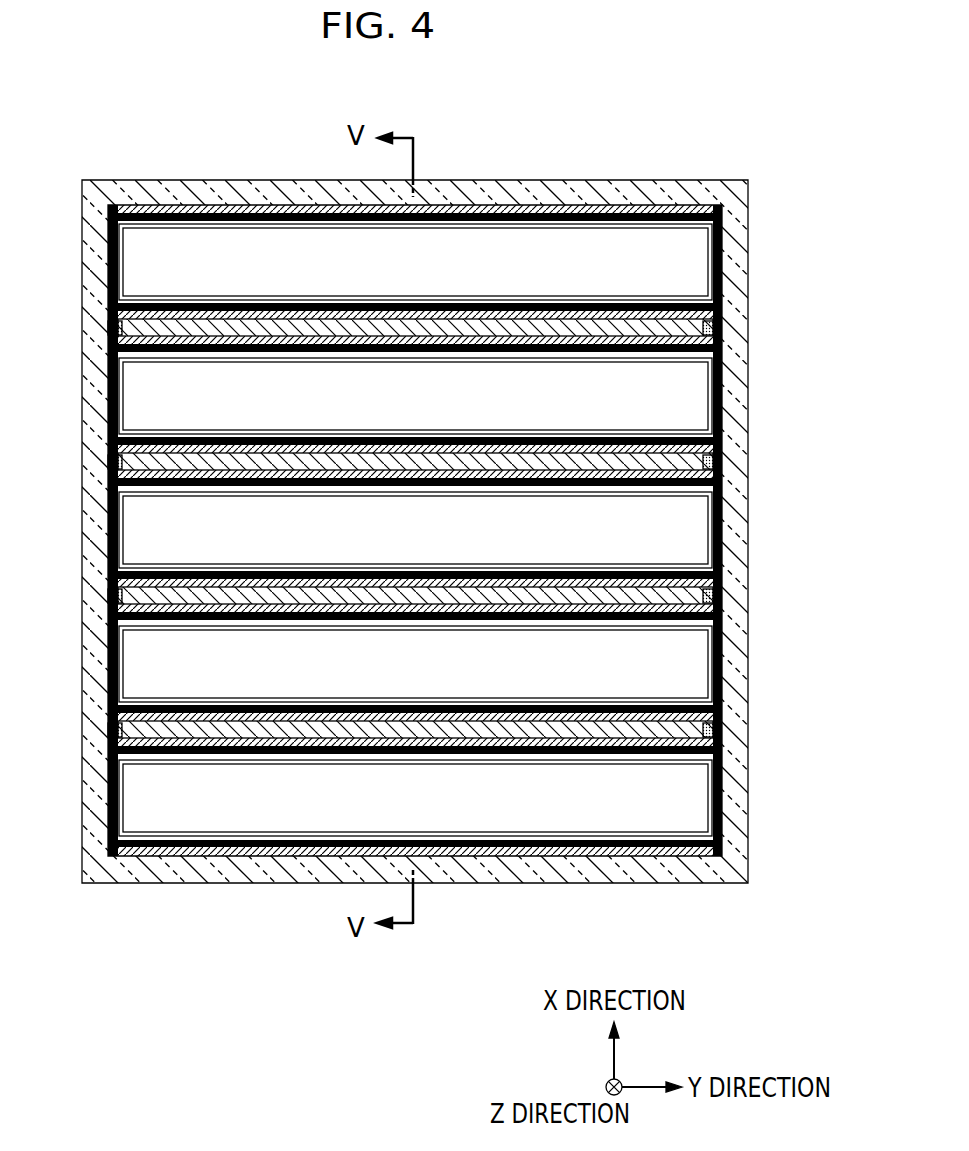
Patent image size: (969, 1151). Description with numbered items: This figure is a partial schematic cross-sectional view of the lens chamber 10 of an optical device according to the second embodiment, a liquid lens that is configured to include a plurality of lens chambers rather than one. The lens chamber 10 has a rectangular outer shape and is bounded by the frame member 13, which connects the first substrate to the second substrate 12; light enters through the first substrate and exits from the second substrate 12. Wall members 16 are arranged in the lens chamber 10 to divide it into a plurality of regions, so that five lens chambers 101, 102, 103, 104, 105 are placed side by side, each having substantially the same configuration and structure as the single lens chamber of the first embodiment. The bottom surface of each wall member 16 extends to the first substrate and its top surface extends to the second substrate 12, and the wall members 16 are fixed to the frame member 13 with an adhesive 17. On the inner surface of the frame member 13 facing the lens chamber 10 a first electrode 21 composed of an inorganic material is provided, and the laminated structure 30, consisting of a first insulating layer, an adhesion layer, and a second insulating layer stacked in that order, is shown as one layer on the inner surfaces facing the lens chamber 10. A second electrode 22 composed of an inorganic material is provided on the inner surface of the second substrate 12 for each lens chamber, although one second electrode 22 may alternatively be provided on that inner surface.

The lens chamber 10 is at (415, 531).
The lens chamber 101 is at (445, 811).
The lens chamber 102 is at (445, 677).
The lens chamber 103 is at (445, 543).
The lens chamber 104 is at (445, 409).
The lens chamber 105 is at (445, 275).
The second substrate 12 is at (712, 640).
The frame member 13 is at (180, 190).
The wall member 16 is at (673, 733).
The adhesive 17 is at (718, 466).
The first electrode 21 is at (415, 537).
The second electrode 22 is at (232, 826).
The laminated structure 30 is at (456, 494).